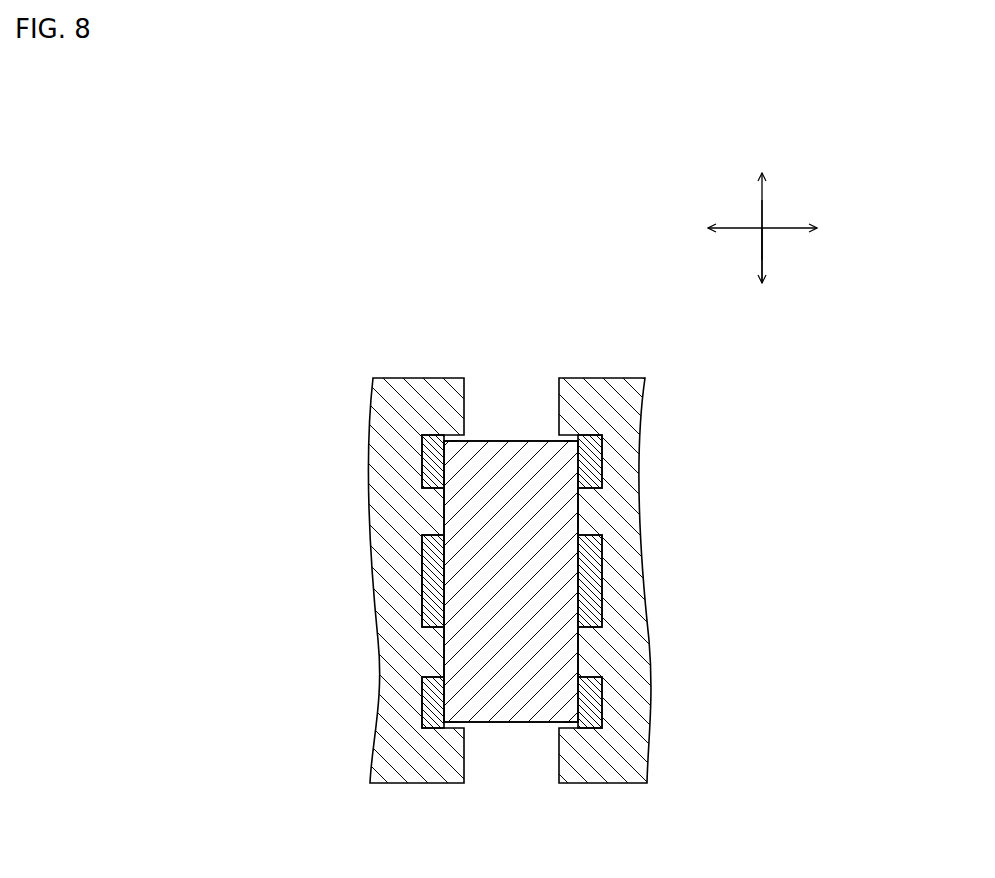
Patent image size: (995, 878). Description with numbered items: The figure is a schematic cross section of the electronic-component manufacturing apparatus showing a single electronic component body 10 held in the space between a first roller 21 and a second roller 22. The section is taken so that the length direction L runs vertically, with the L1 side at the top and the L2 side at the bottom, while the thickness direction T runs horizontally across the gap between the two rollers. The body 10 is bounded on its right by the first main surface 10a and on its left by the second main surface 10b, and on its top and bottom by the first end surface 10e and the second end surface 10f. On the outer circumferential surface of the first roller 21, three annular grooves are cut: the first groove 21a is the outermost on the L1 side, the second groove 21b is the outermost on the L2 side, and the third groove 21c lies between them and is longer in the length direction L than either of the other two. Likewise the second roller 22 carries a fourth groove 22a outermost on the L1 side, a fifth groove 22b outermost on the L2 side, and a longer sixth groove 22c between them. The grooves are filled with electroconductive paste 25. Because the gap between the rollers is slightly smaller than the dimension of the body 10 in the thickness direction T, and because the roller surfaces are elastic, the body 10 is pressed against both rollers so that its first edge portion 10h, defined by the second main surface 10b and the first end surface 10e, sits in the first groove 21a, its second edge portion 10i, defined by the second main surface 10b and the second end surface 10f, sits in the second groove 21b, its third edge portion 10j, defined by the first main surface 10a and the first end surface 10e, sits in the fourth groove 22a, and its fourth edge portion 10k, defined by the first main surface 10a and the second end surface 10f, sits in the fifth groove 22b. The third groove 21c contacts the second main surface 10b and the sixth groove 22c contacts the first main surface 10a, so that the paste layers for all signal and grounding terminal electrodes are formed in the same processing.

The electronic component body 10 is at (496, 439).
The first main surface 10a is at (578, 653).
The second main surface 10b is at (443, 510).
The first end surface 10e is at (533, 441).
The second end surface 10f is at (513, 722).
The first edge portion 10h is at (443, 441).
The second edge portion 10i is at (443, 722).
The third edge portion 10j is at (578, 441).
The fourth edge portion 10k is at (578, 722).
The first roller 21 is at (421, 376).
The first groove 21a is at (430, 440).
The second groove 21b is at (422, 682).
The third groove 21c is at (422, 598).
The second roller 22 is at (609, 376).
The fourth groove 22a is at (590, 480).
The fifth groove 22b is at (592, 723).
The sixth groove 22c is at (590, 548).
The electroconductive paste 25 is at (418, 558).
The L1 side L1 is at (765, 215).
The L2 side L2 is at (765, 271).
The thickness direction T is at (790, 228).
The length direction L is at (765, 257).